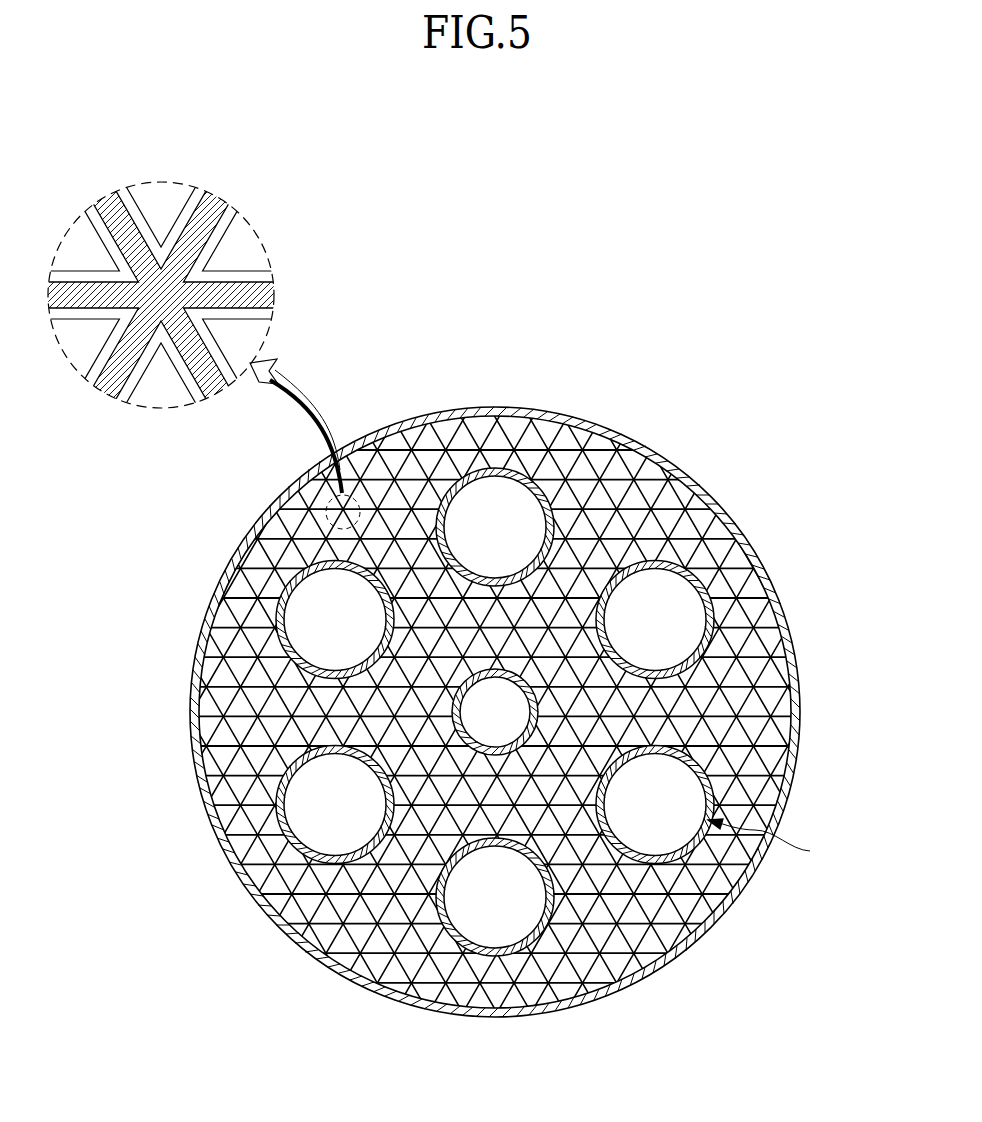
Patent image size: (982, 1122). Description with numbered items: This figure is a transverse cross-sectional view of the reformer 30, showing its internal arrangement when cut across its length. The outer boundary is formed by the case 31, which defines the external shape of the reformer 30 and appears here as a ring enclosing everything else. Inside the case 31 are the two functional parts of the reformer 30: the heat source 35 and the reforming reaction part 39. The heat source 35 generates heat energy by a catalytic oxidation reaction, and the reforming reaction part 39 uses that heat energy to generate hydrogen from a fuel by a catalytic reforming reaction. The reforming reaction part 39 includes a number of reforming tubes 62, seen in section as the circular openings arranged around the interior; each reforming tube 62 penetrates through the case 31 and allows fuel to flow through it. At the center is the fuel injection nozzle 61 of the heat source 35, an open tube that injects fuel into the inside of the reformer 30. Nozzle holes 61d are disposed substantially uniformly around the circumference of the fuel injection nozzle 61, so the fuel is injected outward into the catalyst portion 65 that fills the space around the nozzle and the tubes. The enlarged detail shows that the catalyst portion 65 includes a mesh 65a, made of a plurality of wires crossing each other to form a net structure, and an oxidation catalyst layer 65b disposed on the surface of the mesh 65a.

The reformer 30 is at (491, 583).
The case 31 is at (785, 651).
The heat source 35 is at (491, 578).
The fuel injection nozzle 61 is at (526, 690).
The nozzle holes 61d is at (517, 670).
The reforming tube 62 is at (497, 468).
The catalyst portion 65 is at (410, 352).
The mesh 65a is at (212, 200).
The oxidation catalyst layer 65b is at (232, 231).
The reforming reaction part 39 is at (772, 841).